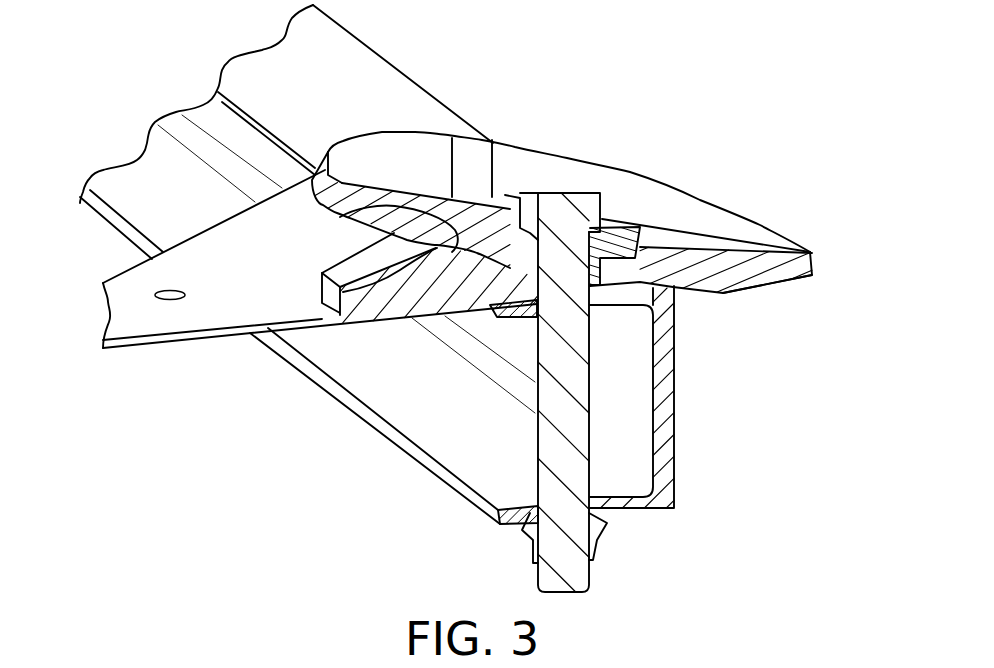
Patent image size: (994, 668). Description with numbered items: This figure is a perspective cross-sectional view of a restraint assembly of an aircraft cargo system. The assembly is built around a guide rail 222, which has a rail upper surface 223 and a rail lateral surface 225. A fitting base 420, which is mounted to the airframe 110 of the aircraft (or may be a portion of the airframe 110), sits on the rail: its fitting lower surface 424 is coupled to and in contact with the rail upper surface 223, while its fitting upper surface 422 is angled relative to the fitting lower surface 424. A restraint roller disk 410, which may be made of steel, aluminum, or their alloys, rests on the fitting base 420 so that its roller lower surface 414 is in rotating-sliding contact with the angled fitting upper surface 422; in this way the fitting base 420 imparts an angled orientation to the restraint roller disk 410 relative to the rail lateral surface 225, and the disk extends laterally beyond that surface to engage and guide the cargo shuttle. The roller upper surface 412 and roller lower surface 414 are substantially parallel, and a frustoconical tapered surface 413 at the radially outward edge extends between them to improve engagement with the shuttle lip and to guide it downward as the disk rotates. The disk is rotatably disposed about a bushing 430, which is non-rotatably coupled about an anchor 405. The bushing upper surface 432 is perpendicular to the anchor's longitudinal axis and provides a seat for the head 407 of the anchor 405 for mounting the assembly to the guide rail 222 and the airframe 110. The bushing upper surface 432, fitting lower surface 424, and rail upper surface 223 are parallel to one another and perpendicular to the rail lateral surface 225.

The airframe 110 is at (160, 318).
The guide rail 222 is at (362, 78).
The rail upper surface 223 is at (320, 290).
The rail lateral surface 225 is at (675, 440).
The anchor 405 is at (648, 342).
The head 407 is at (591, 223).
The restraint roller disk 410 is at (587, 206).
The roller upper surface 412 is at (462, 157).
The frustoconical tapered surface 413 is at (763, 292).
The roller lower surface 414 is at (472, 258).
The fitting base 420 is at (364, 254).
The fitting upper surface 422 is at (366, 255).
The fitting lower surface 424 is at (513, 316).
The bushing 430 is at (633, 247).
The bushing upper surface 432 is at (623, 223).